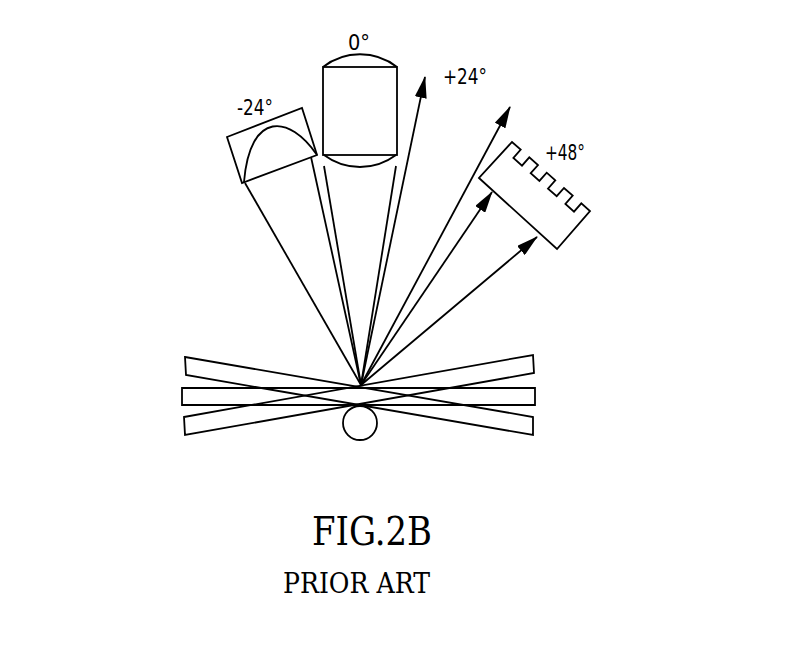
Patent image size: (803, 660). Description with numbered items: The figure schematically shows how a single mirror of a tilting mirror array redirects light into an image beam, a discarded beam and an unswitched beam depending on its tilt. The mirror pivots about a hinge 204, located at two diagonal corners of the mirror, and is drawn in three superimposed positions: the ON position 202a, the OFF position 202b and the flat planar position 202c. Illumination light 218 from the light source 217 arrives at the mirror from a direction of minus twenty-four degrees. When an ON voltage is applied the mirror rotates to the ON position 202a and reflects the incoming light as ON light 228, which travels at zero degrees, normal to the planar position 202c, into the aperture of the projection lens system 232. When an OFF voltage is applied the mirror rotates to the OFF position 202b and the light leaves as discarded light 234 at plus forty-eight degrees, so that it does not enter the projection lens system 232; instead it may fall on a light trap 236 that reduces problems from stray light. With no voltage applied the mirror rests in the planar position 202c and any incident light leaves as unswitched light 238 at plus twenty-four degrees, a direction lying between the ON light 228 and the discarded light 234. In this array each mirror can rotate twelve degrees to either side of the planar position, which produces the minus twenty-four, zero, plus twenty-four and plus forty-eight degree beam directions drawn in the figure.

The projection lens system 232 is at (323, 80).
The ON light 228 is at (340, 260).
The light source 217 is at (233, 155).
The illumination light 218 is at (277, 237).
The unswitched light 238 is at (493, 135).
The discarded light 234 is at (488, 280).
The light trap 236 is at (575, 232).
The ON position 202a is at (182, 425).
The OFF position 202b is at (183, 363).
The planar position 202c is at (180, 392).
The hinge 204 is at (360, 440).